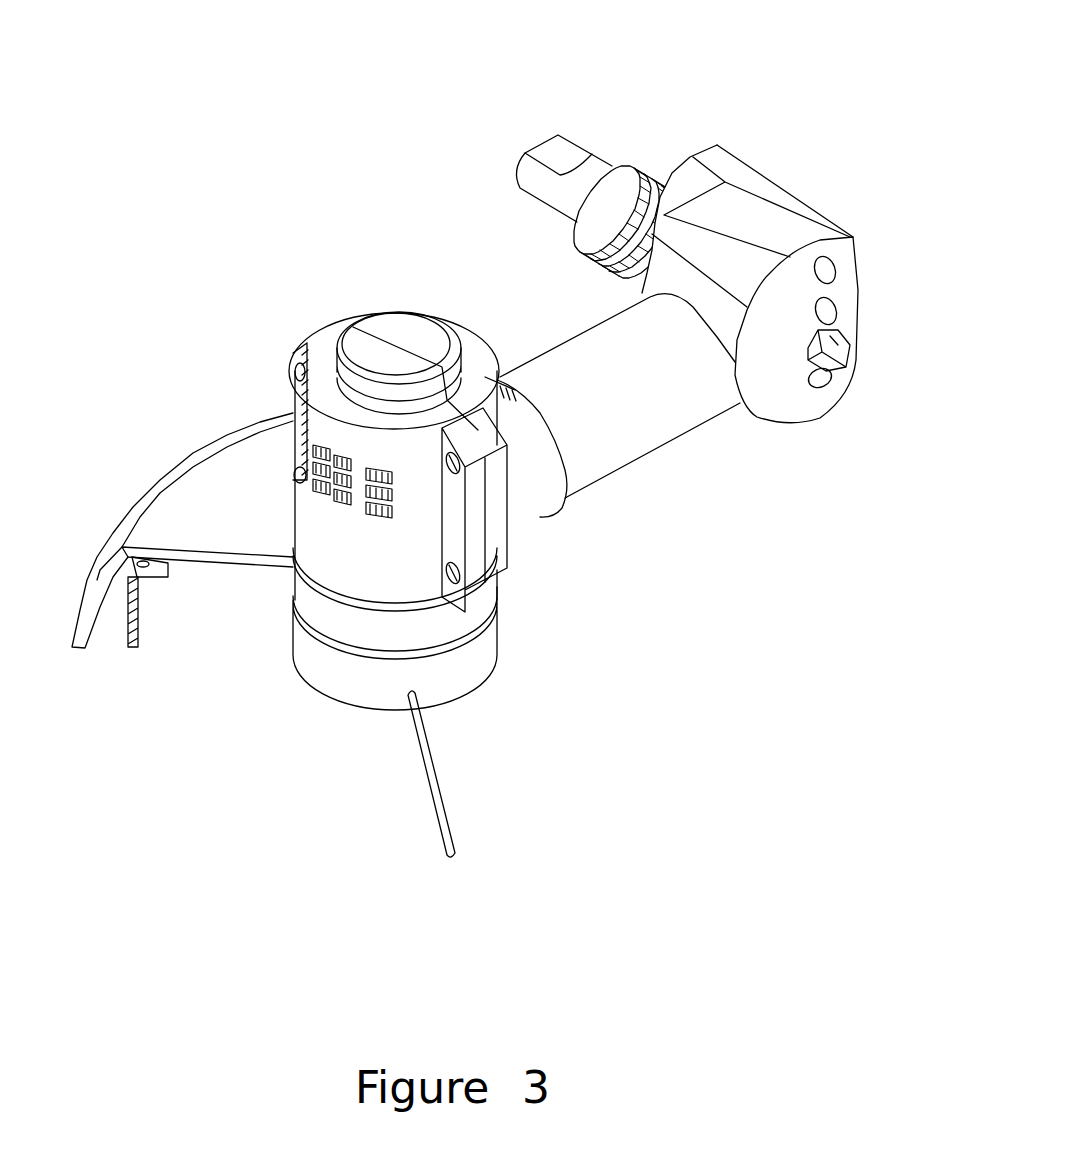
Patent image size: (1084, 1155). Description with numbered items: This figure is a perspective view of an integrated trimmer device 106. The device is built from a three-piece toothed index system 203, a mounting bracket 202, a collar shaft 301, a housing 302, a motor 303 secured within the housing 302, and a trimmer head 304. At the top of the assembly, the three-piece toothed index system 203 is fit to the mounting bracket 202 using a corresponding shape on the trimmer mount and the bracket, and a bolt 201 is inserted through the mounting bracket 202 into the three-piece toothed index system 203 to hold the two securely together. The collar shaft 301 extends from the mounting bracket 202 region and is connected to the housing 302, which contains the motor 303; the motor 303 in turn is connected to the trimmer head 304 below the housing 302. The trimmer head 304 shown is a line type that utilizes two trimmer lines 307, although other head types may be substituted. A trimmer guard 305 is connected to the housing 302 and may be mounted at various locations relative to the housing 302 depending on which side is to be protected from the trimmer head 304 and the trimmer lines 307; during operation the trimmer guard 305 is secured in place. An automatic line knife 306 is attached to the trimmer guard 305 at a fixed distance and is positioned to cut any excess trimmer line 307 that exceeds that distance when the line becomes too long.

The integrated trimmer device 106 is at (548, 350).
The bolt 201 is at (840, 358).
The mounting bracket 202 is at (843, 283).
The three-piece toothed index system 203 is at (627, 162).
The collar shaft 301 is at (660, 452).
The housing 302 is at (490, 520).
The motor 303 is at (392, 515).
The trimmer head 304 is at (485, 690).
The trimmer guard 305 is at (166, 470).
The automatic line knife 306 is at (128, 622).
The trimmer line 307 is at (425, 775).